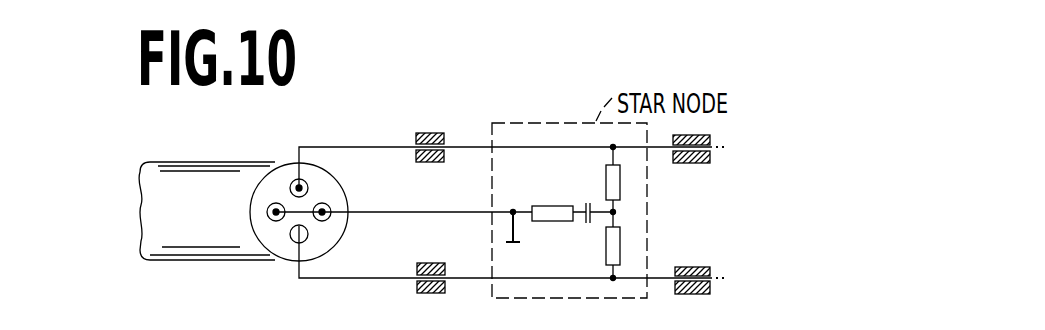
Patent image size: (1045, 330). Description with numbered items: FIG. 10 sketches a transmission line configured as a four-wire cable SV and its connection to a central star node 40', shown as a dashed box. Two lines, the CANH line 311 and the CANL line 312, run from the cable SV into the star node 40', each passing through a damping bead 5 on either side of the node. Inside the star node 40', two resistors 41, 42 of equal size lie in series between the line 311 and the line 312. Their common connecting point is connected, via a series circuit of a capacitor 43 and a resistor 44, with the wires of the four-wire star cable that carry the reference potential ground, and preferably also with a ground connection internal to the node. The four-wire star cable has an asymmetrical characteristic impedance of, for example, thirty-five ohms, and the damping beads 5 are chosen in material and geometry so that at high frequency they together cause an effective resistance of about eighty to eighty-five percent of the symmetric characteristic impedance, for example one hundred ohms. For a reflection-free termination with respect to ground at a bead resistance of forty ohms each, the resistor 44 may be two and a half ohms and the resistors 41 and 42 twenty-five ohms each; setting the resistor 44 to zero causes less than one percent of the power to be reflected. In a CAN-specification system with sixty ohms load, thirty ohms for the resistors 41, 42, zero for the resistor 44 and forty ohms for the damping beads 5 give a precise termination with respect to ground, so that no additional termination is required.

The four-wire cable SV is at (206, 238).
The line 311 is at (341, 147).
The line 312 is at (341, 279).
The damping bead 5 is at (426, 133).
The central star node 40' is at (569, 185).
The resistor 41 is at (622, 182).
The resistor 42 is at (622, 243).
The capacitor 43 is at (586, 223).
The resistor 44 is at (549, 206).